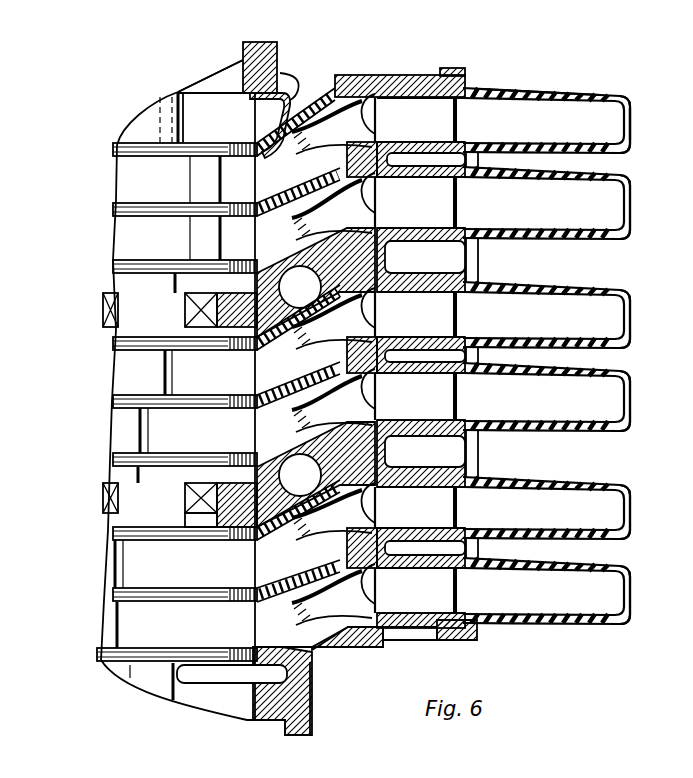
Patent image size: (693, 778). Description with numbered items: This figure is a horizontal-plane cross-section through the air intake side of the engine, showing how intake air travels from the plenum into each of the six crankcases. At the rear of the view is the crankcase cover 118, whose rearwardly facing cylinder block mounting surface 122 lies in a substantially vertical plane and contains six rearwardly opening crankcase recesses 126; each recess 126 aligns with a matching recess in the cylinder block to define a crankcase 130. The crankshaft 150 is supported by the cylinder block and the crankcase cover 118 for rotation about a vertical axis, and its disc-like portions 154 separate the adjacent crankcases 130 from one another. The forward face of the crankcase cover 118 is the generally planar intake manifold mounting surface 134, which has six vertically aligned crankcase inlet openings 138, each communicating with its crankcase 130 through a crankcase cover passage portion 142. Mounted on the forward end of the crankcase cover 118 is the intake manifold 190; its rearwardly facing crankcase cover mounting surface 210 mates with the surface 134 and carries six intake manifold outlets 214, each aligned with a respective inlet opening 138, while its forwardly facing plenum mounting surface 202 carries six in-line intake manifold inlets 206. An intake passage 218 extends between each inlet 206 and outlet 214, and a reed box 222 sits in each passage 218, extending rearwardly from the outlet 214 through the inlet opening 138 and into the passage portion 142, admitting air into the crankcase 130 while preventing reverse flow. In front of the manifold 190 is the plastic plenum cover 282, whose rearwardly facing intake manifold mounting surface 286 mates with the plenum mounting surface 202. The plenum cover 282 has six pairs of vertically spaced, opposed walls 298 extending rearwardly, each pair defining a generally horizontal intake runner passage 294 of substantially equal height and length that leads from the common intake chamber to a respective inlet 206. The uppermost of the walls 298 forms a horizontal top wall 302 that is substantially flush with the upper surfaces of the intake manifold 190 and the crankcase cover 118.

The crankcase cover 118 is at (260, 40).
The cylinder block mounting surface 122 is at (240, 67).
The crankcase recesses 126 is at (247, 190).
The crankcase 130 is at (125, 171).
The intake manifold mounting surface 134 is at (360, 80).
The crankcase inlet openings 138 is at (335, 93).
The crankcase cover passage portion 142 is at (311, 98).
The crankshaft 150 is at (148, 672).
The disc-like portions 154 is at (115, 149).
The intake manifold 190 is at (425, 76).
The plenum mounting surface 202 is at (463, 74).
The intake manifold inlets 206 is at (460, 140).
The crankcase cover mounting surface 210 is at (336, 648).
The intake manifold outlets 214 is at (378, 122).
The intake passage 218 is at (440, 113).
The reed boxes 222 is at (362, 140).
The plenum cover 282 is at (637, 112).
The intake manifold mounting surface 286 is at (447, 642).
The intake runner passages 294 is at (605, 131).
The opposed walls 298 is at (605, 91).
The top wall 302 is at (549, 91).